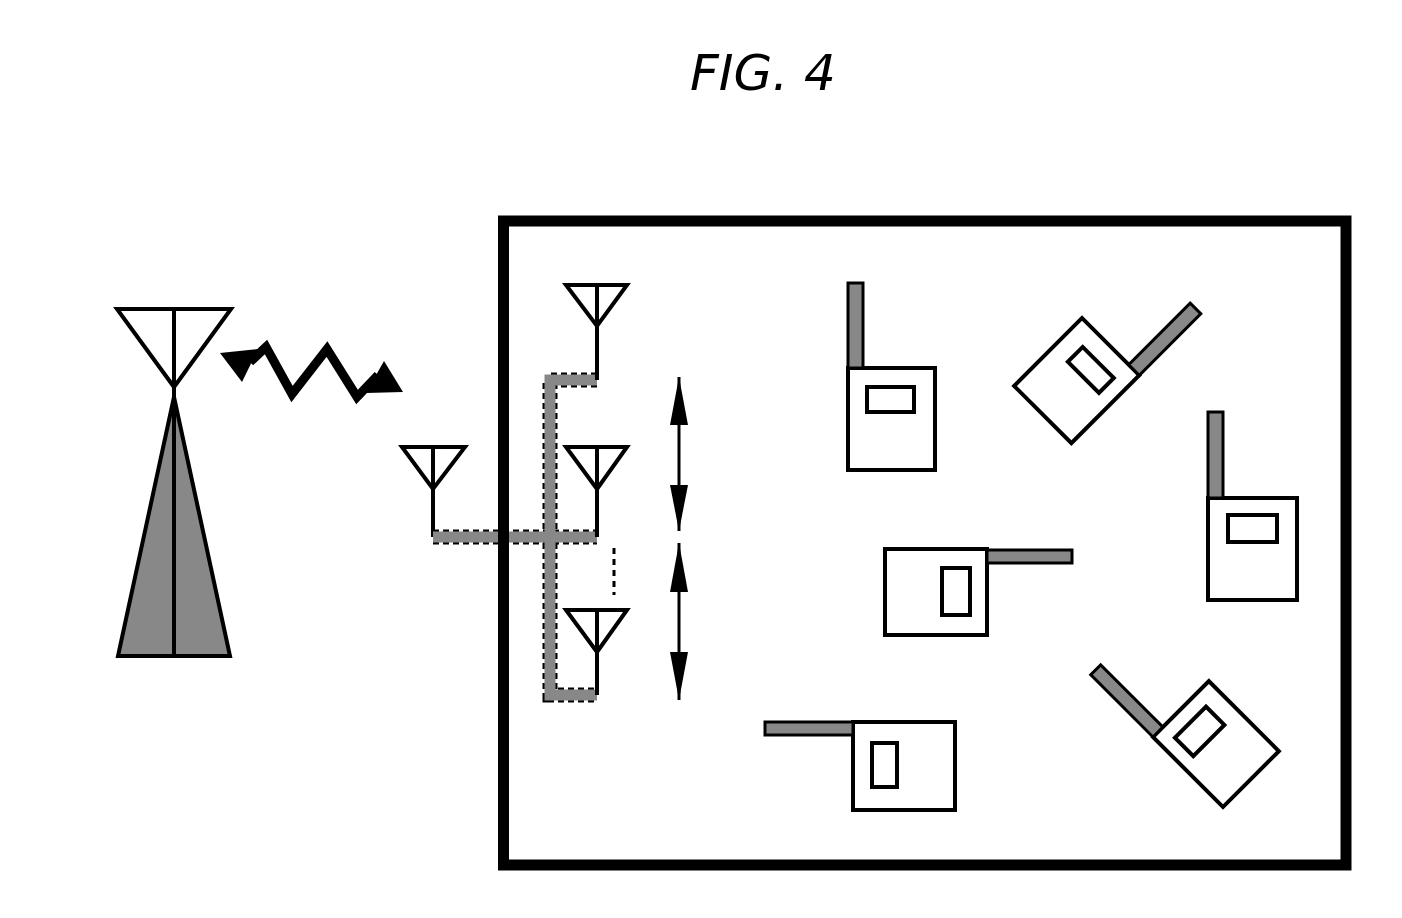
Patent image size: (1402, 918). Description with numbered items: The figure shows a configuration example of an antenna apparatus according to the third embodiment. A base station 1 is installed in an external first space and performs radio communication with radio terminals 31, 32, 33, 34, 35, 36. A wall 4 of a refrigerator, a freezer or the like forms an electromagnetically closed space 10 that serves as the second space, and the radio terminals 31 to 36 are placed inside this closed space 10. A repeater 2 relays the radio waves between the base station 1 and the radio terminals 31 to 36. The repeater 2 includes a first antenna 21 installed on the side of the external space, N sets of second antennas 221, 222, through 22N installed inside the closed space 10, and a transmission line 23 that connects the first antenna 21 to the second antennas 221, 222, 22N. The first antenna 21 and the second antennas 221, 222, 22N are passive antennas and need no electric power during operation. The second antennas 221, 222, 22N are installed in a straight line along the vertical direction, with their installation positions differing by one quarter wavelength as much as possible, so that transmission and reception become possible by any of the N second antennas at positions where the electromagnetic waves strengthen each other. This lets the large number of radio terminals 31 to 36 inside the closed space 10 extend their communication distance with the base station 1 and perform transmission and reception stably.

The base station 1 is at (183, 317).
The repeater 2 is at (551, 490).
The wall 4 is at (498, 700).
The closed space 10 is at (940, 241).
The first antenna 21 is at (430, 457).
The transmission line 23 is at (465, 547).
The second antenna 221 is at (603, 303).
The second antenna 222 is at (578, 457).
The second antenna 22N is at (607, 622).
The radio terminal 31 is at (877, 377).
The radio terminal 32 is at (1098, 328).
The radio terminal 33 is at (920, 563).
The radio terminal 34 is at (1228, 490).
The radio terminal 35 is at (935, 765).
The radio terminal 36 is at (1205, 688).